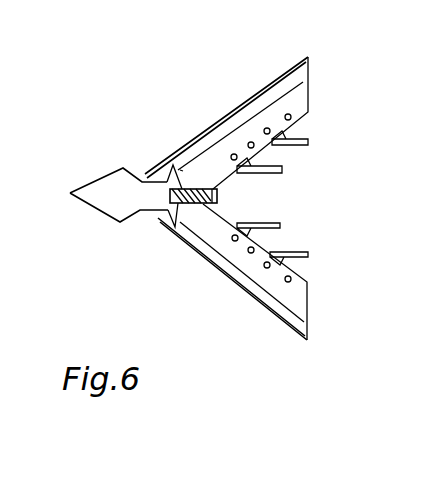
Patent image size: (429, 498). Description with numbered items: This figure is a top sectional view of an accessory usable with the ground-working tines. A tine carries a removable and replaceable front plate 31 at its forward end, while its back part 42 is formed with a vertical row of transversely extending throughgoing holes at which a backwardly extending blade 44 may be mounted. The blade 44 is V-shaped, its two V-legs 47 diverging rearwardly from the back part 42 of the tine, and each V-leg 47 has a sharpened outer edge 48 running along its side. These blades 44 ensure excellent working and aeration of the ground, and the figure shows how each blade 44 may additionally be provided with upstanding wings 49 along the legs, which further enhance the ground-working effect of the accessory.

The front plate 31 is at (128, 207).
The back part 42 is at (195, 189).
The blade 44 is at (229, 281).
The V-leg 47 is at (300, 88).
The sharpened outer edge 48 is at (226, 208).
The upstanding wing 49 is at (282, 170).